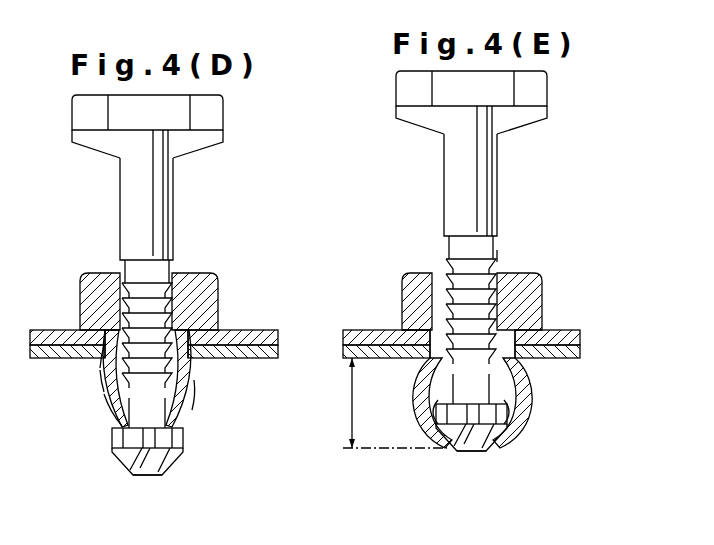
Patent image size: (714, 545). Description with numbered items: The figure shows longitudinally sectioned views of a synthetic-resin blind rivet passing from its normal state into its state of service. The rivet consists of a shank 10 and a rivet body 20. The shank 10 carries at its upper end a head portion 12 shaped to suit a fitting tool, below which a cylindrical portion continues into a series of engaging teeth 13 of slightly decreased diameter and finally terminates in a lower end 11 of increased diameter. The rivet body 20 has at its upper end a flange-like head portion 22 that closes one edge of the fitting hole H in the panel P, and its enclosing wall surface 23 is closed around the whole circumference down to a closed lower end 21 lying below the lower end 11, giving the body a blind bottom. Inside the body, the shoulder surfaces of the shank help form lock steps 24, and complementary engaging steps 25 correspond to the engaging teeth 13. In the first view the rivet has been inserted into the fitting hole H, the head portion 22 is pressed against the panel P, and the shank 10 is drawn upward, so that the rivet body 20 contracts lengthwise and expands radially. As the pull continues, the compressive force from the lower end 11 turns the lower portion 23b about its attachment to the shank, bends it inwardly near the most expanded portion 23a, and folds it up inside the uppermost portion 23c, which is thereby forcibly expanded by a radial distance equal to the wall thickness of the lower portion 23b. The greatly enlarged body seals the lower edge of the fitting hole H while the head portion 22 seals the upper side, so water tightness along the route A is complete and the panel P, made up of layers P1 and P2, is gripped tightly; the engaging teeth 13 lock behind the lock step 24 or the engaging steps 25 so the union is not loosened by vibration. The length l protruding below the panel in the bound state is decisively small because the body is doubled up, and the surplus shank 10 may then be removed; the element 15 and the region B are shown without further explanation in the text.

In FIG. 4D, the shank 10 is at (153, 183).
In FIG. 4E, the shank 10 is at (478, 157).
In FIG. 4D, the lower end of the shank 11 is at (168, 463).
In FIG. 4E, the lower end of the shank 11 is at (483, 450).
In FIG. 4D, the head portion of the shank 12 is at (87, 120).
In FIG. 4E, the head portion of the shank 12 is at (532, 90).
In FIG. 4D, the engaging teeth 13 is at (160, 260).
In FIG. 4E, the engaging teeth 13 is at (460, 318).
In FIG. 4D, the nut 15 is at (180, 437).
In FIG. 4E, the nut 15 is at (505, 435).
In FIG. 4D, the rivet body 20 is at (200, 410).
In FIG. 4D, the lower end of the rivet body 21 is at (137, 473).
In FIG. 4E, the lower end of the rivet body 21 is at (455, 450).
In FIG. 4D, the head portion of the rivet body 22 is at (148, 340).
In FIG. 4D, the enclosing wall surface 23 is at (193, 383).
In FIG. 4D, the most expanded portion 23a is at (110, 385).
In FIG. 4D, the lower portion of the enclosing wall 23b is at (110, 410).
In FIG. 4E, the lower portion of the enclosing wall 23b is at (508, 413).
In FIG. 4D, the uppermost portion of the enclosing wall 23c is at (107, 367).
In FIG. 4E, the uppermost portion of the enclosing wall 23c is at (418, 390).
In FIG. 4D, the lock step 24 is at (95, 278).
In FIG. 4E, the lock step 24 is at (427, 280).
In FIG. 4D, the engaging steps 25 is at (172, 322).
In FIG. 4E, the engaging steps 25 is at (490, 303).
In FIG. 4D, the fitting hole H is at (105, 337).
In FIG. 4E, the fitting hole H is at (512, 337).
In FIG. 4D, the panel P is at (176, 380).
In FIG. 4E, the panel P is at (497, 355).
In FIG. 4D, the first panel P1 is at (277, 338).
In FIG. 4E, the first panel P1 is at (582, 337).
In FIG. 4D, the second panel P2 is at (263, 357).
In FIG. 4E, the second panel P2 is at (582, 356).
In FIG. 4E, the route A is at (395, 330).
In FIG. 4E, the thread engagement region B is at (497, 262).
In FIG. 4E, the rivet length l is at (395, 403).